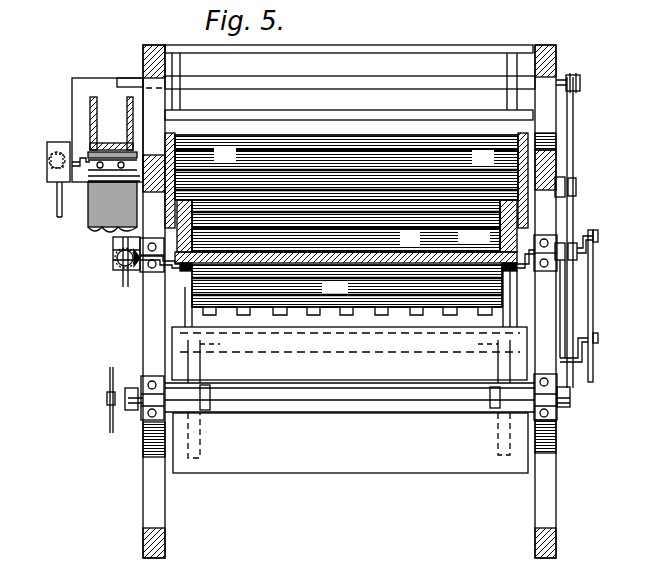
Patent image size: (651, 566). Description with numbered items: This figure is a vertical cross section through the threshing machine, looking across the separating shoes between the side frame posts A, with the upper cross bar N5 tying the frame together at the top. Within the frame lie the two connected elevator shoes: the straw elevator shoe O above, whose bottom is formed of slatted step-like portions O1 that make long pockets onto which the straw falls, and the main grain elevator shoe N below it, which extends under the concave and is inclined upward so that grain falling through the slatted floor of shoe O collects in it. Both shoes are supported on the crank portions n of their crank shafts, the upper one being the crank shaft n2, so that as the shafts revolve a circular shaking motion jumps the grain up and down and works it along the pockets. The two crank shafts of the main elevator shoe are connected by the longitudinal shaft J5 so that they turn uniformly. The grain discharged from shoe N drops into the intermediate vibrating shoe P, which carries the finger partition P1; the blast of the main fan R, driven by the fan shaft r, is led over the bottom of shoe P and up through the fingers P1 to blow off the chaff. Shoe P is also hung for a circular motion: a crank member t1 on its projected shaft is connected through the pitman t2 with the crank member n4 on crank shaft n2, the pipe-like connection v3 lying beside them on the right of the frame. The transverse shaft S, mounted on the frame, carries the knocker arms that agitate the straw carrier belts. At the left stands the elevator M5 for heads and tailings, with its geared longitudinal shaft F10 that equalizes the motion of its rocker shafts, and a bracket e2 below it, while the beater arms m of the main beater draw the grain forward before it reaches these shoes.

The frame post A is at (152, 470).
The upper cross bar N5 is at (336, 88).
The straw elevator shoe O is at (346, 180).
The slatted step-like portions O1 is at (220, 155).
The main grain elevator shoe N is at (346, 231).
The crank portions n is at (430, 260).
The finger partition P1 is at (315, 311).
The beater arms m is at (358, 283).
The intermediate vibrating shoe P is at (185, 310).
The fan shaft r is at (411, 395).
The main fan R is at (350, 412).
The elevator M5 is at (107, 130).
The longitudinal shaft F10 is at (57, 205).
The bracket e2 is at (90, 178).
The longitudinal shaft J5 is at (114, 262).
The crank shaft n2 is at (168, 272).
The transverse shaft S is at (578, 192).
The pipe v3 is at (574, 309).
The crank member n4 is at (598, 235).
The pitman t2 is at (595, 292).
The crank member t1 is at (598, 337).